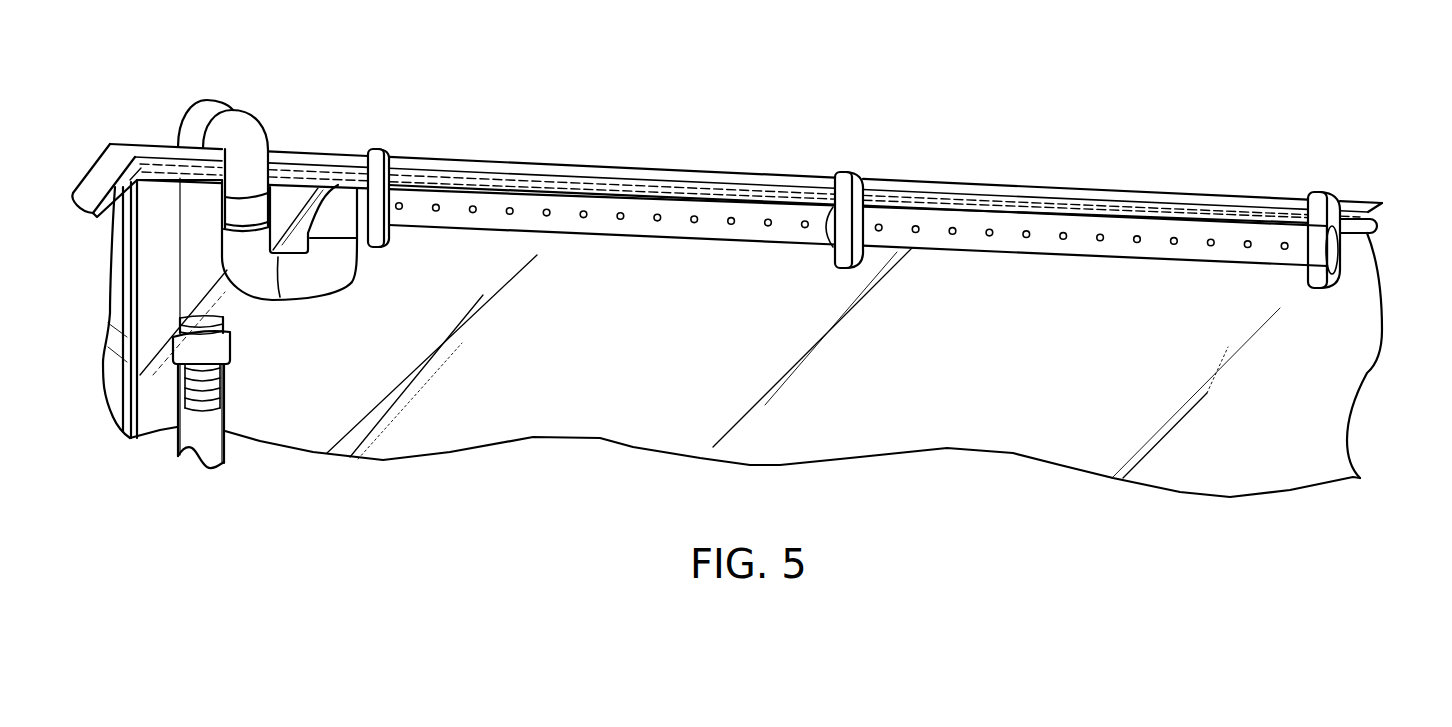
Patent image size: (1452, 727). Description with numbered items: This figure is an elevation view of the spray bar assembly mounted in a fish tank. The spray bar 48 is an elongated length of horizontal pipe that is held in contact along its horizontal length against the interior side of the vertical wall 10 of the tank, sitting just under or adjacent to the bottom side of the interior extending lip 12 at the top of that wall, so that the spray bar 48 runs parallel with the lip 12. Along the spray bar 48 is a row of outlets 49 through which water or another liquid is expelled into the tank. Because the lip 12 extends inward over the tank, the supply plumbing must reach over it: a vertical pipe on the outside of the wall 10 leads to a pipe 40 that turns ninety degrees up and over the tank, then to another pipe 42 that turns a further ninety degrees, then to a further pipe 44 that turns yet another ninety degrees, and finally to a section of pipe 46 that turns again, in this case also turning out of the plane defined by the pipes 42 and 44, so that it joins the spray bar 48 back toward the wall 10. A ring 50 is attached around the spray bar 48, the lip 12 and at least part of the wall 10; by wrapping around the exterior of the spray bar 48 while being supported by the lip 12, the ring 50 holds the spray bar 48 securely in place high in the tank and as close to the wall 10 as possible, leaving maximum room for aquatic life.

The vertical wall 10 is at (1370, 277).
The lip 12 is at (1368, 214).
The pipe 40 is at (192, 118).
The pipe 42 is at (245, 133).
The pipe 44 is at (270, 258).
The section of pipe 46 is at (342, 216).
The spray bar 48 is at (455, 198).
The outlets 49 is at (879, 227).
The ring 50 is at (848, 182).